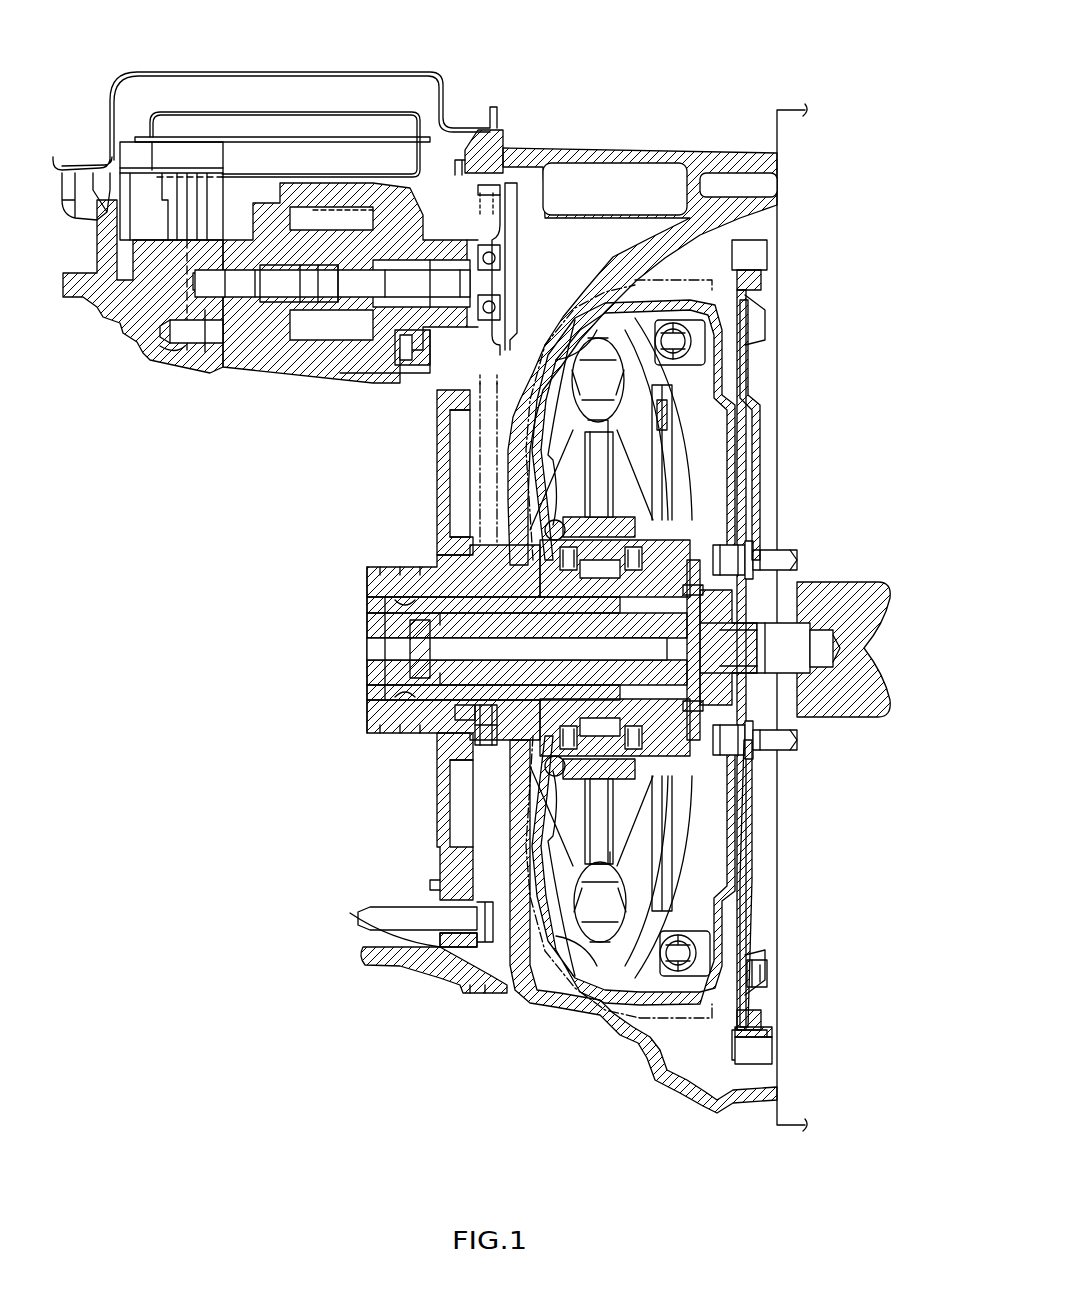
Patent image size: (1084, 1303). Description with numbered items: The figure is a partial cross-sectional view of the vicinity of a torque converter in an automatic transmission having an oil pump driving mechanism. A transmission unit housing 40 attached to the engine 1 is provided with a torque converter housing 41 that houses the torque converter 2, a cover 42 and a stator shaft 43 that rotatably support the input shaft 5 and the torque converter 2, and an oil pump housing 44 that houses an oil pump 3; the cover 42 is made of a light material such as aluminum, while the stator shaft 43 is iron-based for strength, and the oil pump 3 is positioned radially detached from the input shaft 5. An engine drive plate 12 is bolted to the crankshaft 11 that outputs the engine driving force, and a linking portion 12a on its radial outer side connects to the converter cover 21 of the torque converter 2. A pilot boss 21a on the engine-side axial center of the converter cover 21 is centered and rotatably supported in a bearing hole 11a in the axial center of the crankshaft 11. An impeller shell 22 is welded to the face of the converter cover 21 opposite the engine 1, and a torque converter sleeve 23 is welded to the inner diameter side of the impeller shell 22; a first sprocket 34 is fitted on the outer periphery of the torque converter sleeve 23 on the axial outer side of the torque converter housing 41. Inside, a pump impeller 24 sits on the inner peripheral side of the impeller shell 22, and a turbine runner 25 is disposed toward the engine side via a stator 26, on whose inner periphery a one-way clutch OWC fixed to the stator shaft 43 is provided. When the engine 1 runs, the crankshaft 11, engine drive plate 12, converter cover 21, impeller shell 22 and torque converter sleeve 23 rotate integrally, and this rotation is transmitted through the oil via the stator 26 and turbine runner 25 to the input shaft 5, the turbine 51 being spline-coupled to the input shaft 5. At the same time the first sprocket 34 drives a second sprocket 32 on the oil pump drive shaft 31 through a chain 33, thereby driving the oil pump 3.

The engine 1 is at (792, 108).
The torque converter 2 is at (584, 609).
The oil pump 3 is at (428, 190).
The input shaft 5 is at (373, 675).
The crankshaft 11 is at (843, 580).
The bearing hole 11a is at (800, 627).
The engine drive plate 12 is at (752, 407).
The linking portion 12a is at (752, 970).
The converter cover 21 is at (720, 297).
The pilot boss 21a is at (750, 677).
The impeller shell 22 is at (597, 310).
The torque converter sleeve 23 is at (563, 537).
The pump impeller 24 is at (543, 430).
The turbine runner 25 is at (632, 390).
The stator 26 is at (598, 447).
The one-way clutch OWC is at (624, 506).
The oil pump drive shaft 31 is at (398, 282).
The second sprocket 32 is at (500, 237).
The chain 33 is at (487, 472).
The first sprocket 34 is at (480, 727).
The transmission unit housing 40 is at (607, 147).
The torque converter housing 41 is at (510, 502).
The cover 42 is at (373, 580).
The stator shaft 43 is at (373, 607).
The oil pump housing 44 is at (460, 124).
The turbine 51 is at (683, 602).